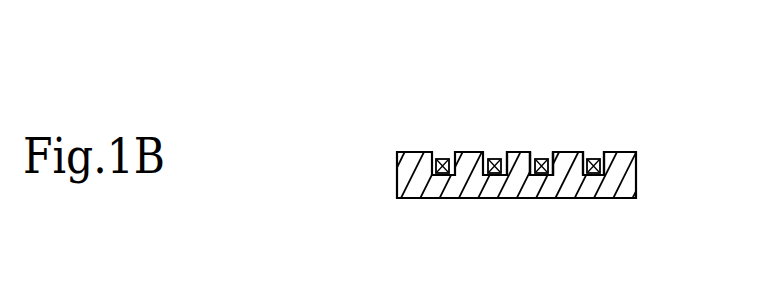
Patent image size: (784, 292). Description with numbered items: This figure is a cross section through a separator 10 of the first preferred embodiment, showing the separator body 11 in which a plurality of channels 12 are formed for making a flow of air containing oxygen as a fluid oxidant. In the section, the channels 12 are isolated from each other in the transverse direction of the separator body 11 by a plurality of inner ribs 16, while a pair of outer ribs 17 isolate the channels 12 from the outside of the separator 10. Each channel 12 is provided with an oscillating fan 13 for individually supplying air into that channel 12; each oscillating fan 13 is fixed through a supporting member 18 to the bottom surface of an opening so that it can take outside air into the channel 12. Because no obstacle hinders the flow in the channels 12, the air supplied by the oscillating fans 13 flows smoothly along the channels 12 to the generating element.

The separator 10 is at (389, 103).
The separator body 11 is at (623, 185).
The channel 12 is at (502, 156).
The oscillating fan 13 is at (553, 168).
The inner rib 16 is at (556, 152).
The outer rib 17 is at (617, 152).
The supporting member 18 is at (597, 164).